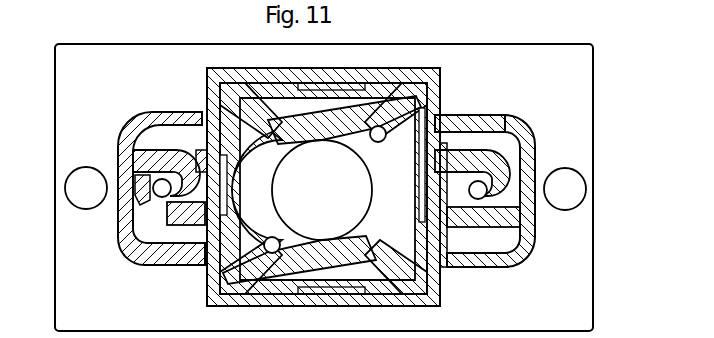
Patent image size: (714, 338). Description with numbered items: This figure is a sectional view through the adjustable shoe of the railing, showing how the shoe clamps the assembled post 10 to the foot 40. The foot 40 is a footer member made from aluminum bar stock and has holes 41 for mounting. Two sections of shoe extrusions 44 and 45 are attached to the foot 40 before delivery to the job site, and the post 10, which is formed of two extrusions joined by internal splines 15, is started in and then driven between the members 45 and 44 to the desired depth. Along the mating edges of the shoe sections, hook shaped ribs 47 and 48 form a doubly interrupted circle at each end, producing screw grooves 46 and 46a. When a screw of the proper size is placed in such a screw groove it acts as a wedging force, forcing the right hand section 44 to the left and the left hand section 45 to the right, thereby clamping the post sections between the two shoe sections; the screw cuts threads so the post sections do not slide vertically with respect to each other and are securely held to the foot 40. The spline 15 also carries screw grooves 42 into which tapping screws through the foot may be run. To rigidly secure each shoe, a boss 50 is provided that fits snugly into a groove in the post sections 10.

The post 10 is at (282, 296).
The spline 15 is at (320, 127).
The foot 40 is at (593, 165).
The holes 41 is at (586, 191).
The screw grooves 42 is at (372, 130).
The shoe extrusion 44 is at (467, 118).
The shoe extrusion 45 is at (207, 283).
The screw groove 46 is at (497, 183).
The screw groove 46a is at (166, 215).
The hook shaped rib 47 is at (168, 150).
The hook shaped rib 48 is at (146, 213).
The boss 50 is at (203, 165).